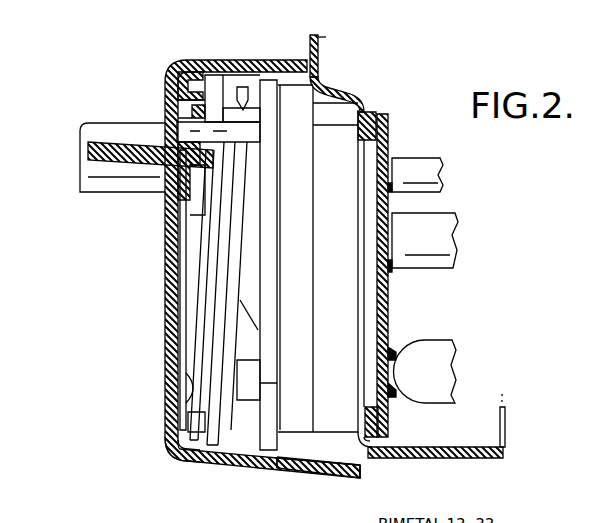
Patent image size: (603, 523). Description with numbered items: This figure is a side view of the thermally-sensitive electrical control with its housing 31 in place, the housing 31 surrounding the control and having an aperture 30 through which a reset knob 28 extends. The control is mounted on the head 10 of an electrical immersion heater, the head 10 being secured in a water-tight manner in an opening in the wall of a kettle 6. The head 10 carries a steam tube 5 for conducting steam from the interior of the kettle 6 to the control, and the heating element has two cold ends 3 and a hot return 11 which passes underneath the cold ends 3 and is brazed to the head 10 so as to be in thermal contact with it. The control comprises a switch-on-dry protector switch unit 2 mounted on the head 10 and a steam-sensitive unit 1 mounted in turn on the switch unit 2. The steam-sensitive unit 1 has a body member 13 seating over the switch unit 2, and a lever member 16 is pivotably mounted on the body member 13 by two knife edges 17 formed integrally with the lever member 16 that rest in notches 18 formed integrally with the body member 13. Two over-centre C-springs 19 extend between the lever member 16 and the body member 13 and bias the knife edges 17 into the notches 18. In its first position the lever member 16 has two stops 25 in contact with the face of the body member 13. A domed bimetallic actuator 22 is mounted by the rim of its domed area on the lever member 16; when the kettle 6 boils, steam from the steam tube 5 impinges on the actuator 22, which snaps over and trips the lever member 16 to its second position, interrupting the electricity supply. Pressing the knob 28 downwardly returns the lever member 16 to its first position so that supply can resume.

The steam-sensitive unit 1 is at (267, 477).
The switch-on-dry protector switch unit 2 is at (318, 145).
The cold ends 3 is at (428, 253).
The steam tube 5 is at (433, 133).
The kettle 6 is at (322, 62).
The head 10 is at (383, 138).
The hot return 11 is at (437, 390).
The body member 13 is at (263, 83).
The lever member 16 is at (217, 352).
The knife edges 17 is at (243, 83).
The notches 18 is at (220, 100).
The over-centre C-springs 19 is at (187, 385).
The bimetallic actuator 22 is at (359, 487).
The stops 25 is at (218, 357).
The knob 28 is at (88, 153).
The aperture 30 is at (167, 118).
The housing 31 is at (193, 463).